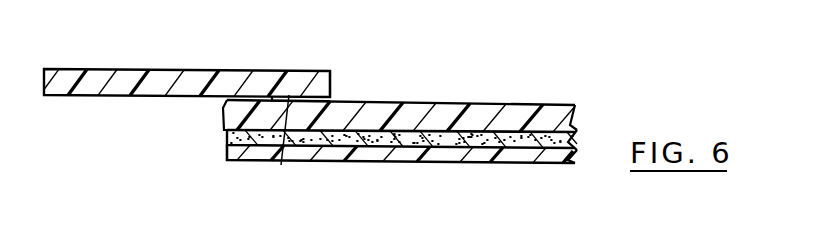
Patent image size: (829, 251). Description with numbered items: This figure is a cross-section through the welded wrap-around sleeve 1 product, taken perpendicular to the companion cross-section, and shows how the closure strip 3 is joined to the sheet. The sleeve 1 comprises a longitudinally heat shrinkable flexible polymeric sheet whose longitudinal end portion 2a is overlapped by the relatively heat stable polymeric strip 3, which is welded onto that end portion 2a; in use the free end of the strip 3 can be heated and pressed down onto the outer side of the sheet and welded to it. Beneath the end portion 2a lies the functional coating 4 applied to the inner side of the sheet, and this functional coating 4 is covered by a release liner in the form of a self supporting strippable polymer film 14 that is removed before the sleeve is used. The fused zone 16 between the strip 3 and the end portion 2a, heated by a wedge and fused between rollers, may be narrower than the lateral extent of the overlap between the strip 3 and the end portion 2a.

The wrap-around sleeve 1 is at (286, 56).
The polymeric strip 3 is at (318, 85).
The end portion 2a is at (397, 105).
The functional coating 4 is at (228, 139).
The strippable polymer film 14 is at (228, 151).
The zone 16 is at (285, 143).